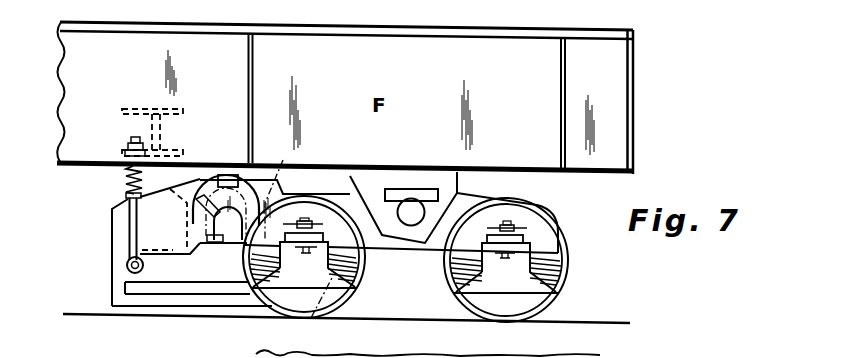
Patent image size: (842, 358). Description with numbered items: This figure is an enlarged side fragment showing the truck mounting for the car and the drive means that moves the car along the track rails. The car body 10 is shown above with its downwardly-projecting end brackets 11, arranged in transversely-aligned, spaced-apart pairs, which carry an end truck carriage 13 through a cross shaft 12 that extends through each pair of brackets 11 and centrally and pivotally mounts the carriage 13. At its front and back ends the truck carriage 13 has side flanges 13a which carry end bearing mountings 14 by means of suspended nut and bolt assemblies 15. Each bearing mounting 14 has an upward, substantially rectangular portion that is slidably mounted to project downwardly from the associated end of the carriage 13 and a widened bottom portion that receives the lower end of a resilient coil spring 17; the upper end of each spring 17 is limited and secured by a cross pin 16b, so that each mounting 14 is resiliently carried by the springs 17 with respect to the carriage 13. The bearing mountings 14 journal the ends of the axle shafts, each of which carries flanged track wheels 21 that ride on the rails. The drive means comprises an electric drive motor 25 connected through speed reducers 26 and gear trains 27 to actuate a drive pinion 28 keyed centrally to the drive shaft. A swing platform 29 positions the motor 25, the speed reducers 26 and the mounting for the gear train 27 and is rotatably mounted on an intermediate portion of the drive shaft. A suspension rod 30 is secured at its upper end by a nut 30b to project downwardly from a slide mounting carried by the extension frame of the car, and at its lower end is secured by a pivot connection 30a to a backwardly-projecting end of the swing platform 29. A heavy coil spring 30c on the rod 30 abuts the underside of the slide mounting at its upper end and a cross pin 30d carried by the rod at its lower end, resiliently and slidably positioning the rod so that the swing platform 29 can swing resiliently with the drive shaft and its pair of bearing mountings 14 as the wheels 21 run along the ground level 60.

The railway car body 10 is at (634, 97).
The end bracket 11 is at (458, 180).
The cross shaft 12 is at (424, 214).
The end truck carriage 13 is at (320, 194).
The side flange 13a is at (294, 222).
The end bearing mounting 14 is at (347, 285).
The nut and bolt assembly 15 is at (324, 237).
The cross pin 16b is at (248, 247).
The resilient coil spring 17 is at (350, 268).
The flanged track wheel 21 is at (353, 309).
The electric drive motor 25 is at (169, 200).
The speed reducer 26 is at (201, 170).
The gear train 27 is at (258, 177).
The drive pinion 28 is at (307, 309).
The swing platform 29 is at (172, 283).
The suspension rod 30 is at (130, 226).
The pivot connection 30a is at (127, 263).
The nut 30b is at (133, 137).
The coil spring 30c is at (125, 178).
The cross pin 30d is at (127, 195).
The ground line 60 is at (256, 354).